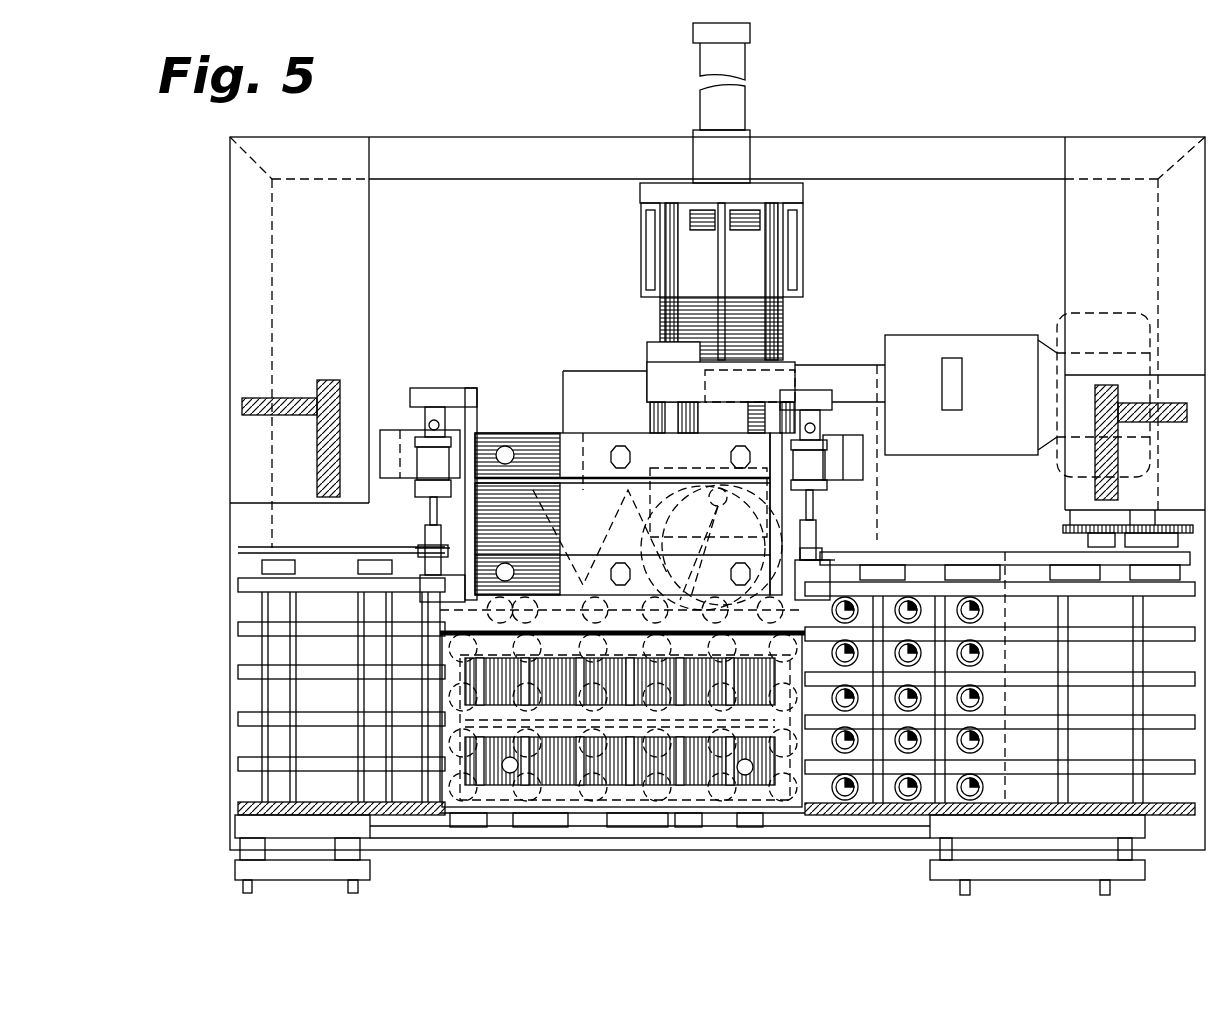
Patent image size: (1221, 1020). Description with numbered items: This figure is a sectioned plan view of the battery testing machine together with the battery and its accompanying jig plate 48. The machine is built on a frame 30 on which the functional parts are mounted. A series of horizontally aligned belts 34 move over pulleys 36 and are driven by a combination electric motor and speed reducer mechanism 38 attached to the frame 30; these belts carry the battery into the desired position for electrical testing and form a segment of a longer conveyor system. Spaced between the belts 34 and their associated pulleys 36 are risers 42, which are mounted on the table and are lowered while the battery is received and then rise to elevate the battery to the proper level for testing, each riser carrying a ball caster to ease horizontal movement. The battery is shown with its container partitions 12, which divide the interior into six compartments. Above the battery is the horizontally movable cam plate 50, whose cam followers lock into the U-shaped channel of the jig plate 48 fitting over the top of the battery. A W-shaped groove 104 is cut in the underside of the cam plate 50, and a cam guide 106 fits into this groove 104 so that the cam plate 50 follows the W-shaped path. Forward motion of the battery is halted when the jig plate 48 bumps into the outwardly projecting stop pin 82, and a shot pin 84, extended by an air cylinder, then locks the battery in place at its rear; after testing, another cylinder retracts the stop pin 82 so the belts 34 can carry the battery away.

The frame 30 is at (948, 145).
The combination electric motor and speed reducer mechanism 38 is at (993, 342).
The cam plate 50 is at (527, 437).
The groove 104 is at (583, 490).
The cam guide 106 is at (810, 518).
The stop pin 82 is at (818, 600).
The shot pin 84 is at (432, 612).
The belts 34 is at (238, 636).
The pulleys 36 is at (238, 752).
The partitions 12 is at (610, 700).
The jig plate 48 is at (790, 800).
The risers 42 is at (906, 795).